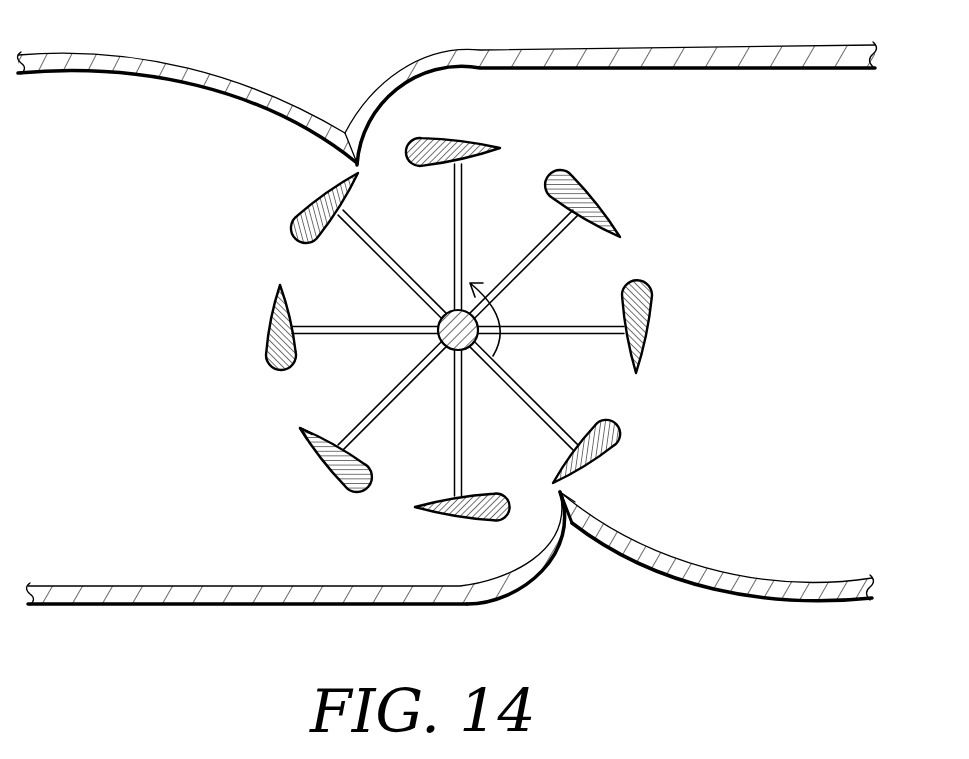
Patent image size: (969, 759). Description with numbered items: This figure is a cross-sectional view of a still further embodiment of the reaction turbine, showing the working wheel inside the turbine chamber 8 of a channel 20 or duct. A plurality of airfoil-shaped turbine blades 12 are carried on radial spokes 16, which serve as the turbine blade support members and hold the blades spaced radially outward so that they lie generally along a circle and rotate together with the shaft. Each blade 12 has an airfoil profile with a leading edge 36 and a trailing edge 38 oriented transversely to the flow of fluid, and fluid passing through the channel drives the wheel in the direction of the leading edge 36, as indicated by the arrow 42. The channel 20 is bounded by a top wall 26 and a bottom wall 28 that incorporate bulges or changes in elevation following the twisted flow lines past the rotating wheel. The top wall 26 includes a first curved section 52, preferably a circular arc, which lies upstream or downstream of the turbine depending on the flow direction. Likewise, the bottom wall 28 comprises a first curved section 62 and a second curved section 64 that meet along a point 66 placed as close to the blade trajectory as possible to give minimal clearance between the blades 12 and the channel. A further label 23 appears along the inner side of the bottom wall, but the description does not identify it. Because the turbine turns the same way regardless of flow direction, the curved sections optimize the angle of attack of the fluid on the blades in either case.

The turbine chamber 8 is at (459, 342).
The airfoil-shaped turbine blades 12 is at (459, 329).
The radial spokes 16 is at (345, 325).
The channel 20 is at (450, 561).
The inner wall surface 23 is at (742, 593).
The top wall 26 is at (447, 88).
The bottom wall 28 is at (128, 598).
The leading edge 36 is at (373, 480).
The trailing edge 38 is at (300, 428).
The arrow 42 is at (504, 306).
The first curved section 52 is at (230, 87).
The first curved section 62 is at (500, 593).
The second curved section 64 is at (717, 564).
The point 66 is at (561, 493).